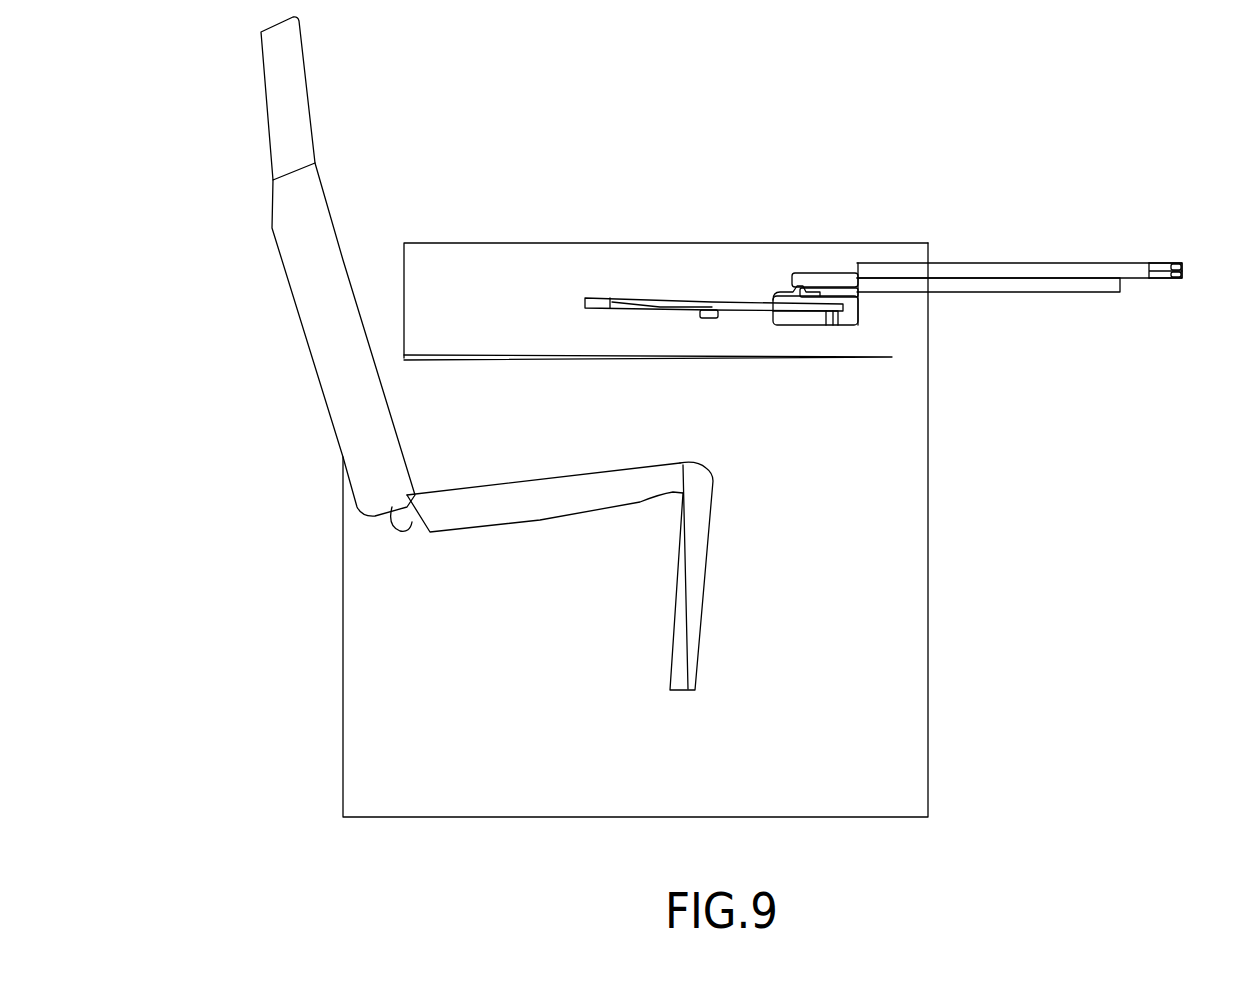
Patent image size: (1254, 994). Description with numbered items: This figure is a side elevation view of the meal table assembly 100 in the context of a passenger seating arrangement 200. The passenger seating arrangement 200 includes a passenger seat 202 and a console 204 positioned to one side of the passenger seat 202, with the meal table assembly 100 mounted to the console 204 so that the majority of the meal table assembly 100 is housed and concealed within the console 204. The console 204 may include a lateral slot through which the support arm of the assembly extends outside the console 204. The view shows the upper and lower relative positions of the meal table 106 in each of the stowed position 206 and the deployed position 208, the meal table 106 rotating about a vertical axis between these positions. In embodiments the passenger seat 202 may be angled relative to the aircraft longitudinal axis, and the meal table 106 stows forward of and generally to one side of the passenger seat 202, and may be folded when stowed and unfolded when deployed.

The meal table assembly 100 is at (895, 246).
The meal table 106 is at (632, 300).
The passenger seating arrangement 200 is at (878, 62).
The passenger seat 202 is at (282, 92).
The console 204 is at (477, 243).
The stowed position 206 is at (1165, 256).
The deployed position 208 is at (597, 281).